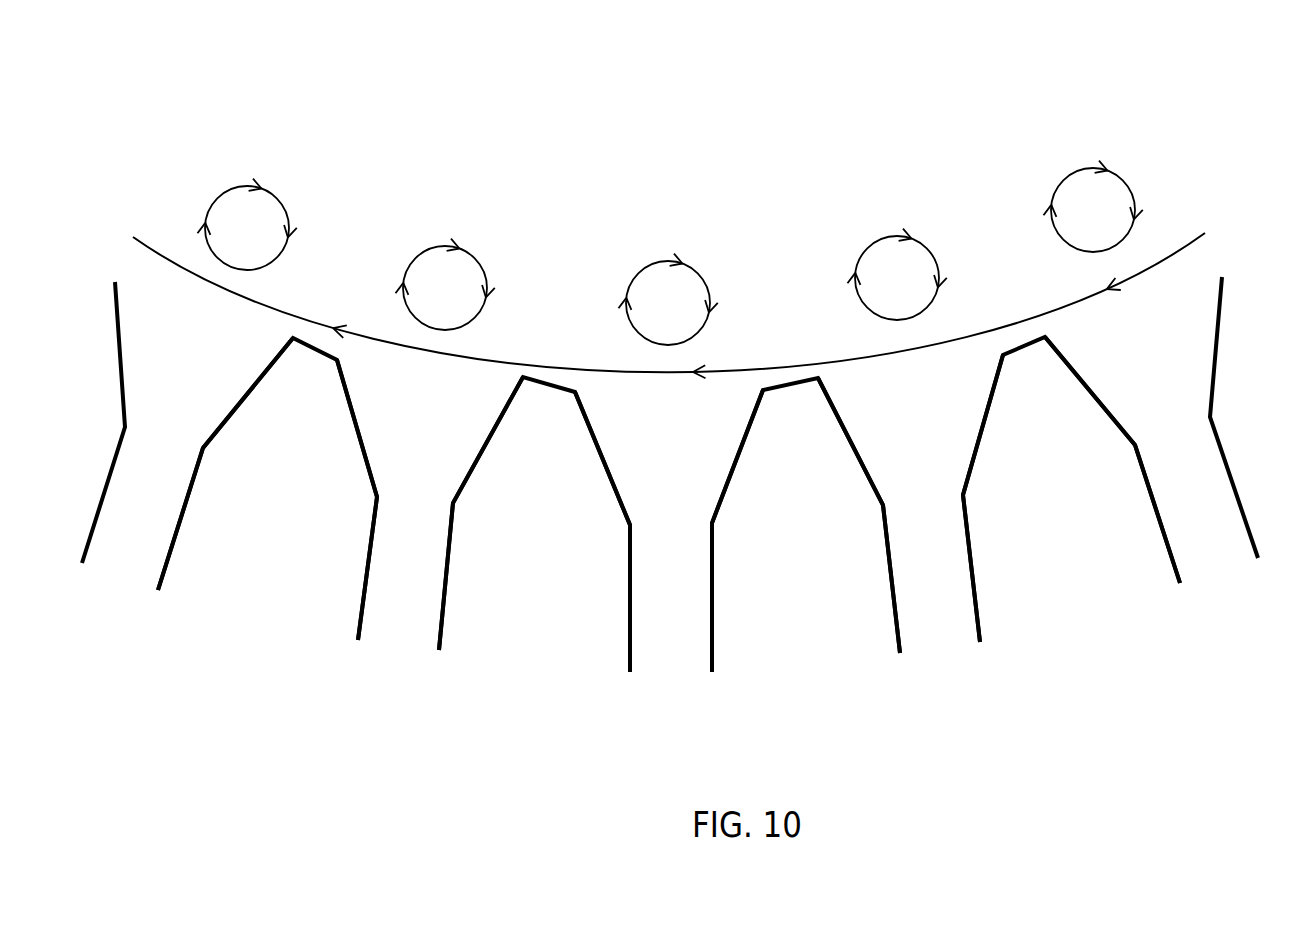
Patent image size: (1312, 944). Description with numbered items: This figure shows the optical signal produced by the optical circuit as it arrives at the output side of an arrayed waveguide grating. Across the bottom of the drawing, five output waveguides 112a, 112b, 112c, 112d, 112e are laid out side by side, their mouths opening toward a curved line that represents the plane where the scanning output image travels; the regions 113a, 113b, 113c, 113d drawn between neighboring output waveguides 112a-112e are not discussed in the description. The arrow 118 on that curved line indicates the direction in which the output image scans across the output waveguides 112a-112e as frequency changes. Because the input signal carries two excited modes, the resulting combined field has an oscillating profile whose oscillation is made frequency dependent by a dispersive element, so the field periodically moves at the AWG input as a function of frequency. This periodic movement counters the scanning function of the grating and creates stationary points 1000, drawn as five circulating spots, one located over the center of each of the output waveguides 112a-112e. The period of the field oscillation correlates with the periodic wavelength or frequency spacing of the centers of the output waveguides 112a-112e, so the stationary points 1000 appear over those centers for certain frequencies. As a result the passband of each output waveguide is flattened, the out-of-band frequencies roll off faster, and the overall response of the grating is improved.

The stationary points 1000 is at (1053, 190).
The arrow 118 is at (1184, 240).
The output waveguide 112a is at (1217, 502).
The output waveguide 112b is at (957, 574).
The output waveguide 112c is at (695, 574).
The output waveguide 112d is at (433, 567).
The output waveguide 112e is at (178, 491).
The protrusion / fin 113a is at (1095, 556).
The protrusion / fin 113b is at (822, 577).
The protrusion / fin 113c is at (568, 577).
The protrusion / fin 113d is at (305, 546).